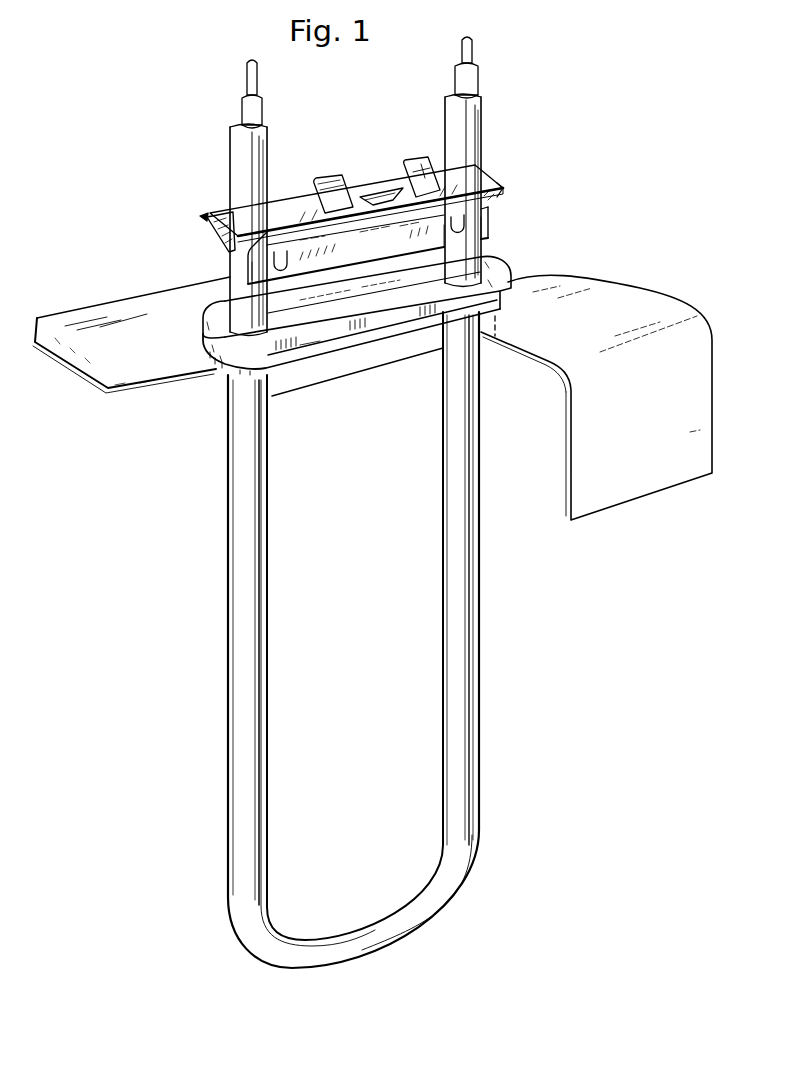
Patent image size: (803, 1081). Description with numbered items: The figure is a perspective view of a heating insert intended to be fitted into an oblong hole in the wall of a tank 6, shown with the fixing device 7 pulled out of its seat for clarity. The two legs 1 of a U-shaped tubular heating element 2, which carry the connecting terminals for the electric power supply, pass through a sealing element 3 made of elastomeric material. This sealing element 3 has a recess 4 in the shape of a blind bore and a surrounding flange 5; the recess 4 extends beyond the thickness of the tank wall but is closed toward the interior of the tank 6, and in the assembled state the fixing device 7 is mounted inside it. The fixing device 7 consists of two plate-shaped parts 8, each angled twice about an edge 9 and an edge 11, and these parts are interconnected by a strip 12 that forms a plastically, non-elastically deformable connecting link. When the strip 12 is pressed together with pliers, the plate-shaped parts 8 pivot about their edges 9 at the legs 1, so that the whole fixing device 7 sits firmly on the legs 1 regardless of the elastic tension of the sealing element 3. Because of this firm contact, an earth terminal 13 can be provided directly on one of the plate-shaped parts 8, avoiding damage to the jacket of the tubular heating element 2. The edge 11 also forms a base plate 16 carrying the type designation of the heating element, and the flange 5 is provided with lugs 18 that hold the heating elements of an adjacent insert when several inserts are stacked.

The legs 1 is at (480, 134).
The tubular heating element 2 is at (462, 830).
The sealing element 3 is at (381, 362).
The recess 4 is at (329, 305).
The flange 5 is at (500, 280).
The tank 6 is at (653, 422).
The fixing device 7 is at (355, 178).
The plate-shaped parts 8 is at (208, 235).
The edges 9 is at (483, 212).
The edge 11 is at (501, 185).
The strip 12 is at (332, 182).
The earth terminal 13 is at (420, 165).
The base plate 16 is at (303, 222).
The lugs 18 is at (260, 366).